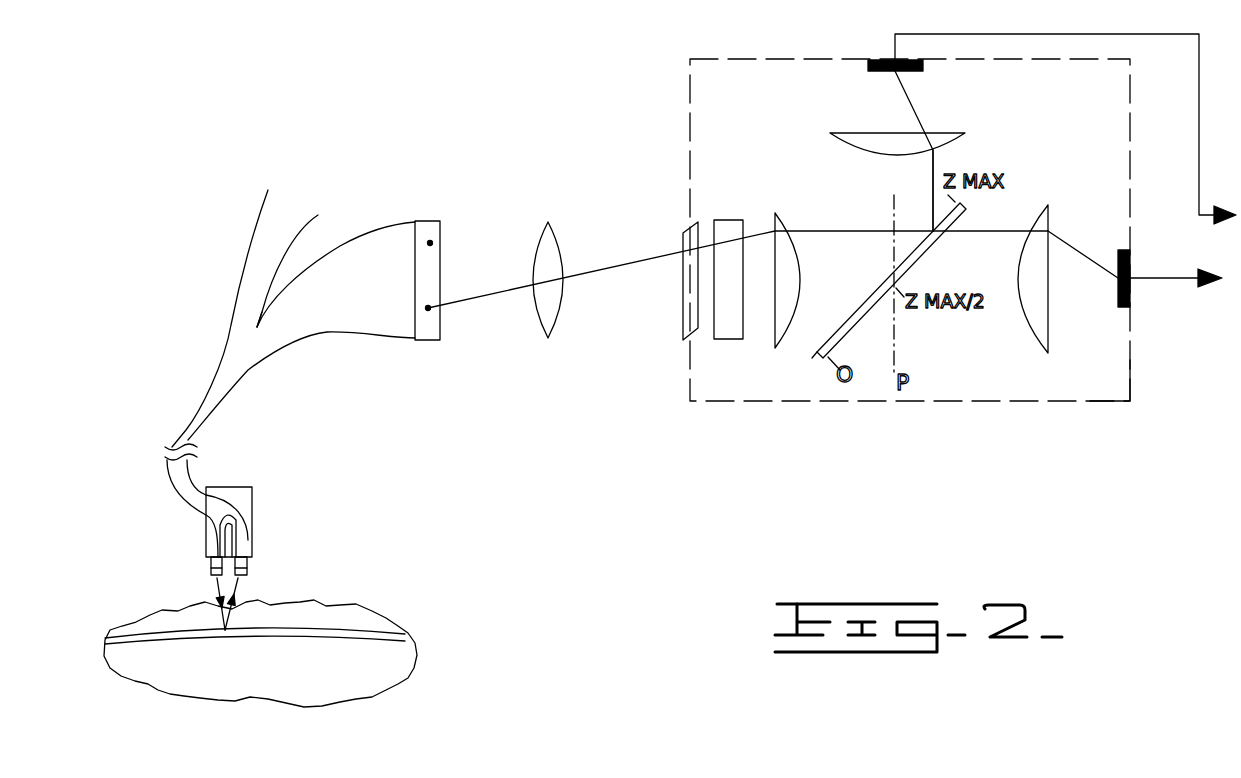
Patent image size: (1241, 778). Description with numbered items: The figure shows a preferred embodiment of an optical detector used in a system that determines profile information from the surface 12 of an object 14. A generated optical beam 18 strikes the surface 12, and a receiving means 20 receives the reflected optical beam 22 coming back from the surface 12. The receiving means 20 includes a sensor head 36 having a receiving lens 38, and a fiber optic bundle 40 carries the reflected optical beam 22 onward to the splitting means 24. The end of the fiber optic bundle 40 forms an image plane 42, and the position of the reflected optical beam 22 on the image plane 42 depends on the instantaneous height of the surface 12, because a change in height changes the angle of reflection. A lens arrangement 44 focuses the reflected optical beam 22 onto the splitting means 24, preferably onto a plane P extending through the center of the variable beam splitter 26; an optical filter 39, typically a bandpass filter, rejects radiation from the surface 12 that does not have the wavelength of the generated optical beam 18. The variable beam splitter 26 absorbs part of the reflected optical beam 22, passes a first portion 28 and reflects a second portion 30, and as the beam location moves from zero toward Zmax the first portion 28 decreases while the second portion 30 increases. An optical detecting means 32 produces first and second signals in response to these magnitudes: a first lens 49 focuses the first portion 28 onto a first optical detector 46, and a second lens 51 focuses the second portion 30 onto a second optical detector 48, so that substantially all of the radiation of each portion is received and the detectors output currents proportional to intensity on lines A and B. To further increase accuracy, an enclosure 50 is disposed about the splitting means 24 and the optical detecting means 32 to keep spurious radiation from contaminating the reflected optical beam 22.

The surface 12 is at (372, 618).
The object 14 is at (419, 690).
The generated optical beam 18 is at (196, 596).
The receiving means 20 is at (233, 191).
The reflected optical beam 22 is at (252, 594).
The splitting means 24 is at (952, 362).
The variable beam splitter 26 is at (817, 353).
The first portion 28 is at (1012, 213).
The second portion 30 is at (955, 151).
The optical detecting means 32 is at (1136, 84).
The sensor head 36 is at (245, 500).
The receiving lens 38 is at (248, 568).
The optical filter 39 is at (722, 355).
The fiber optic bundle 40 is at (262, 358).
The image plane 42 is at (432, 242).
The lens arrangement 44 is at (628, 364).
The first optical detector 46 is at (1132, 259).
The second optical detector 48 is at (873, 58).
The first lens 49 is at (1042, 330).
The enclosure 50 is at (1114, 415).
The second lens 51 is at (945, 127).